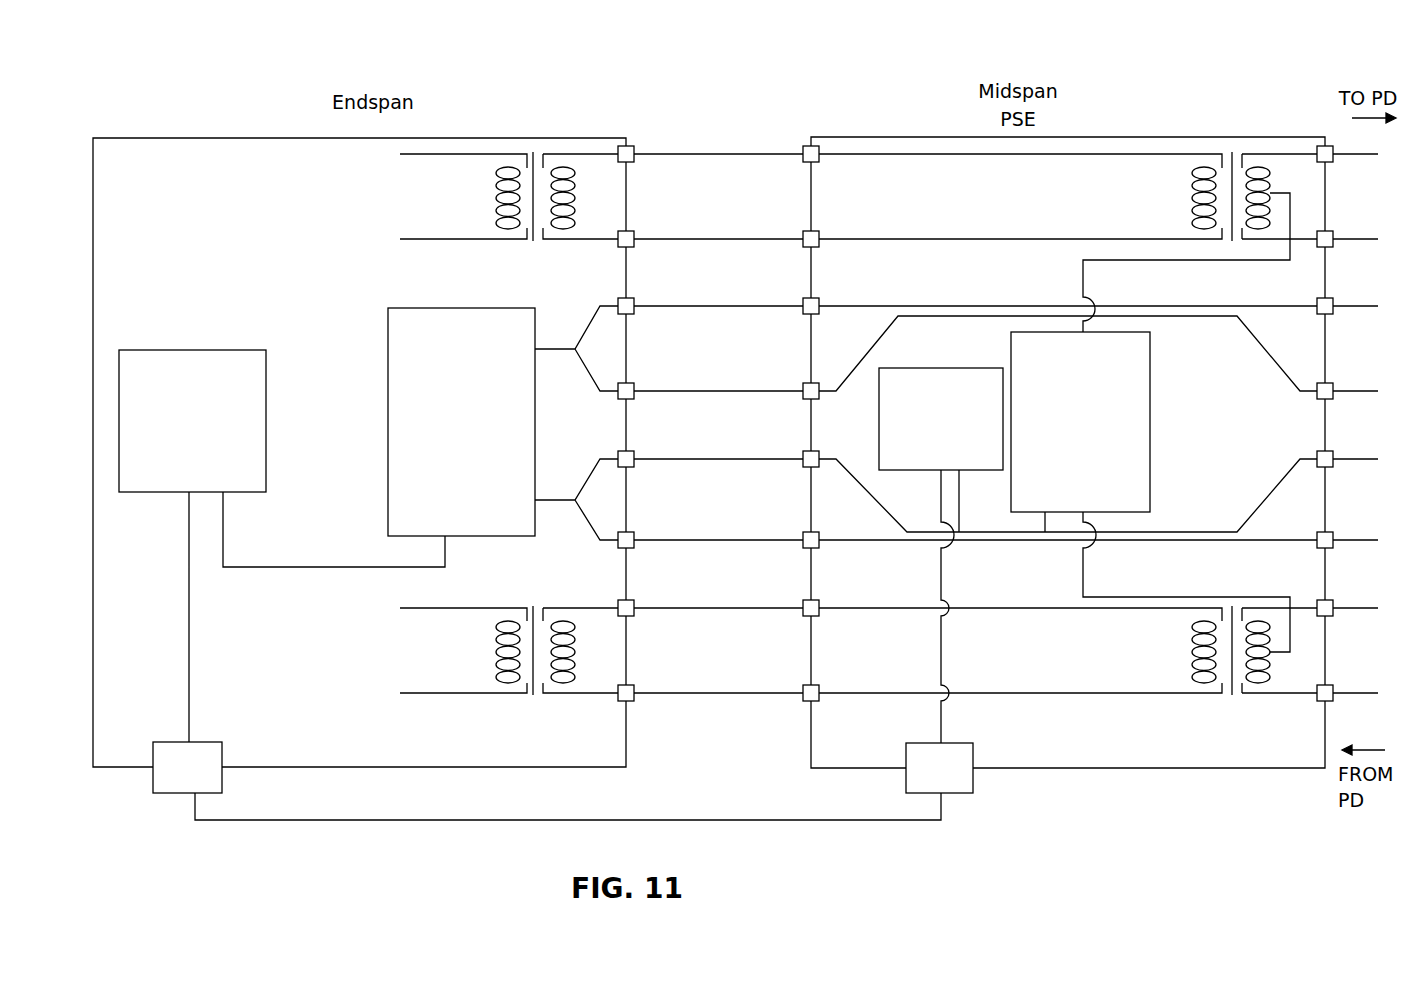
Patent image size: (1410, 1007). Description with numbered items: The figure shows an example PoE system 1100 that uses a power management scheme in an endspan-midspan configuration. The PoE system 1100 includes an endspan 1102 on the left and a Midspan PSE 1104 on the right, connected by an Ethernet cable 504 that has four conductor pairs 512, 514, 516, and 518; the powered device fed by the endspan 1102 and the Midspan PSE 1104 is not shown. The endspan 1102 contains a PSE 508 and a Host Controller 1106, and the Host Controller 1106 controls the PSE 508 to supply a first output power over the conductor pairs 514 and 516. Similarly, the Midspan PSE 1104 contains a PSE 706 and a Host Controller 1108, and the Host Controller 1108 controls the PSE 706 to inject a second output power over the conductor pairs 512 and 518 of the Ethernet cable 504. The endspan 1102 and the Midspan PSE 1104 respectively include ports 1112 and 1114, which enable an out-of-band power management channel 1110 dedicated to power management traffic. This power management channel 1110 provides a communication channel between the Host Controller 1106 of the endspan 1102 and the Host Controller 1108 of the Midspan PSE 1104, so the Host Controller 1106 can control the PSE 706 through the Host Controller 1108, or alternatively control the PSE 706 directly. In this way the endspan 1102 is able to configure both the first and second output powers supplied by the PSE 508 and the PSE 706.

The Ethernet cable 504 is at (731, 72).
The conductor pair 512 is at (714, 152).
The conductor pair 514 is at (714, 306).
The conductor pair 516 is at (714, 458).
The conductor pair 518 is at (714, 607).
The PoE system 1100 is at (1232, 80).
The Host Controller 1106 is at (185, 350).
The PSE 508 is at (388, 395).
The Host Controller 1108 is at (944, 368).
The PSE 706 is at (1150, 400).
The endspan 1102 is at (93, 600).
The port 1112 is at (153, 770).
The power management channel 1110 is at (426, 820).
The port 1114 is at (973, 778).
The Midspan PSE 1104 is at (1243, 768).